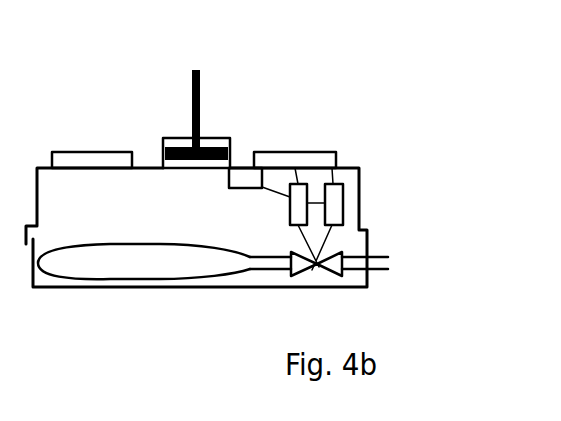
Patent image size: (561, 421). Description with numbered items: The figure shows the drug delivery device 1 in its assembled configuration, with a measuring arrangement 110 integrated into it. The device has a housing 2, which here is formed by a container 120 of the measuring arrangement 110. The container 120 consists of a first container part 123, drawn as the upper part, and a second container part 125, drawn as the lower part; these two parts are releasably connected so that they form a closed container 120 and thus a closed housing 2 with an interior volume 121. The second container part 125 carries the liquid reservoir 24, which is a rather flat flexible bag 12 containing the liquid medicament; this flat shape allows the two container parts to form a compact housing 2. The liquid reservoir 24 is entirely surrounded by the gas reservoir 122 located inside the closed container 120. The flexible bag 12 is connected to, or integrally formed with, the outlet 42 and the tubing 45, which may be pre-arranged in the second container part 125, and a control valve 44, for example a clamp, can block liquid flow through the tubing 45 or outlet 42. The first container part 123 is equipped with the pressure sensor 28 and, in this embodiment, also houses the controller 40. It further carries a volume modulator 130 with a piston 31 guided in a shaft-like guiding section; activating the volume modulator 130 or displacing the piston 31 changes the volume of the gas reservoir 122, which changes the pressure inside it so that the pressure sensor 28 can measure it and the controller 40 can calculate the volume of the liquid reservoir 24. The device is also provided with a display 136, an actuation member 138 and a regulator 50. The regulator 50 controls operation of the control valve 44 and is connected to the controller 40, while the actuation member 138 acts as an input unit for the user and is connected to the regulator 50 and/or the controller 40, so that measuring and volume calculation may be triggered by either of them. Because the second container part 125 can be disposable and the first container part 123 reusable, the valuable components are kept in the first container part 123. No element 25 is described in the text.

The drug delivery device 1 is at (258, 113).
The housing 2 is at (378, 148).
The flexible bag 12 is at (83, 233).
The liquid reservoir 24 is at (142, 275).
The reservoir wall 25 is at (163, 245).
The pressure sensor 28 is at (245, 180).
The piston 31 is at (183, 160).
The controller 40 is at (309, 272).
The outlet 42 is at (250, 271).
The control valve 44 is at (339, 275).
The tubing 45 is at (275, 280).
The regulator 50 is at (343, 217).
The measuring arrangement 110 is at (289, 113).
The container 120 is at (44, 120).
The interior volume 121 is at (82, 180).
The gas reservoir 122 is at (97, 233).
The first container part 123 is at (143, 168).
The second container part 125 is at (188, 287).
The volume modulator 130 is at (179, 106).
The display 136 is at (332, 153).
The actuation member 138 is at (117, 162).